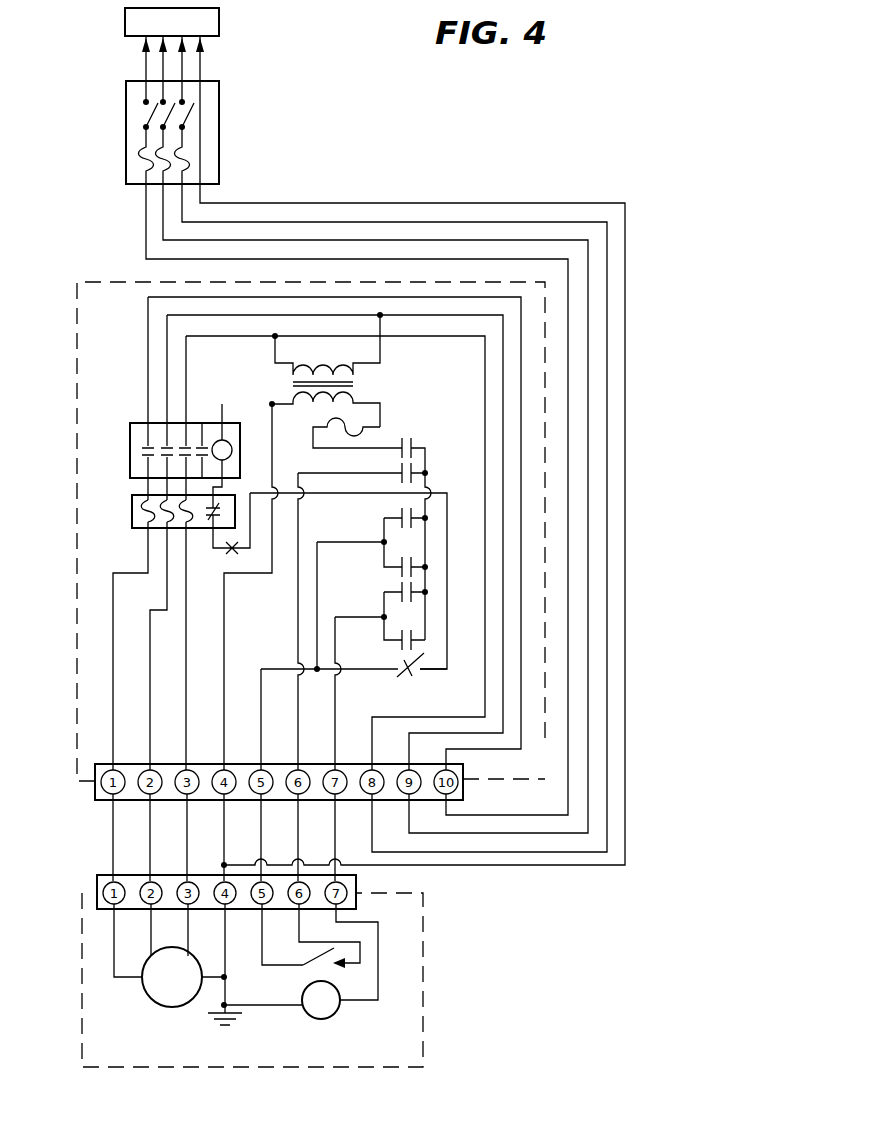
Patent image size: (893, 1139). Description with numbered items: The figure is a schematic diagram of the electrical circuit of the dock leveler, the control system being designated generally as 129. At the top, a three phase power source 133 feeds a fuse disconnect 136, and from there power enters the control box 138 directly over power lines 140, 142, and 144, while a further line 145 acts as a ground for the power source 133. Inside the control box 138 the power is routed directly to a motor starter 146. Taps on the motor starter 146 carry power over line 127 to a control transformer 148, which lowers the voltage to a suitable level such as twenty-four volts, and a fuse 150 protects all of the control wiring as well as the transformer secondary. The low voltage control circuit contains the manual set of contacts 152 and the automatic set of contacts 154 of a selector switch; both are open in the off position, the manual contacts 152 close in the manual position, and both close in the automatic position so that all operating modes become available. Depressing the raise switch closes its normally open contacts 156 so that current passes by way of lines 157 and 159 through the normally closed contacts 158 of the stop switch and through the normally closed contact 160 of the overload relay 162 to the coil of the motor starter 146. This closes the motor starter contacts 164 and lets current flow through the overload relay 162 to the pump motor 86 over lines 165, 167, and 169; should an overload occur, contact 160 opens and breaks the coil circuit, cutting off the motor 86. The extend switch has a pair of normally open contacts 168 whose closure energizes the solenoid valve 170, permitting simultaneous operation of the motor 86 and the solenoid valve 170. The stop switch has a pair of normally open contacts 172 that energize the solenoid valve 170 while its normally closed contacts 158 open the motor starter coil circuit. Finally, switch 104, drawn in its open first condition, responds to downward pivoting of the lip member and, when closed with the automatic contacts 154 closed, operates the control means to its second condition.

The three phase power source 133 is at (219, 26).
The fuse disconnect 136 is at (219, 142).
The power line 140 is at (568, 290).
The power line 142 is at (588, 328).
The power line 144 is at (607, 320).
The ground line 145 is at (625, 350).
The line 127 is at (382, 317).
The control transformer 148 is at (353, 384).
The fuse 150 is at (345, 424).
The manual set of contacts 152 is at (411, 443).
The automatic set of contacts 154 is at (411, 470).
The normally open contacts 156 is at (411, 521).
The line 157 is at (346, 541).
The normally closed contacts 158 is at (420, 683).
The line 159 is at (320, 492).
The normally closed contact 160 is at (213, 518).
The overload relay 162 is at (156, 530).
The motor starter contacts 164 is at (148, 446).
The motor starter 146 is at (159, 451).
The normally open contacts 168 is at (396, 592).
The normally open contacts 172 is at (410, 637).
The control system 129 is at (672, 553).
The control box 138 is at (77, 640).
The line 169 is at (113, 812).
The line 167 is at (150, 828).
The line 165 is at (187, 848).
The switch 104 is at (340, 951).
The solenoid valve 170 is at (342, 996).
The pump motor 86 is at (166, 1005).